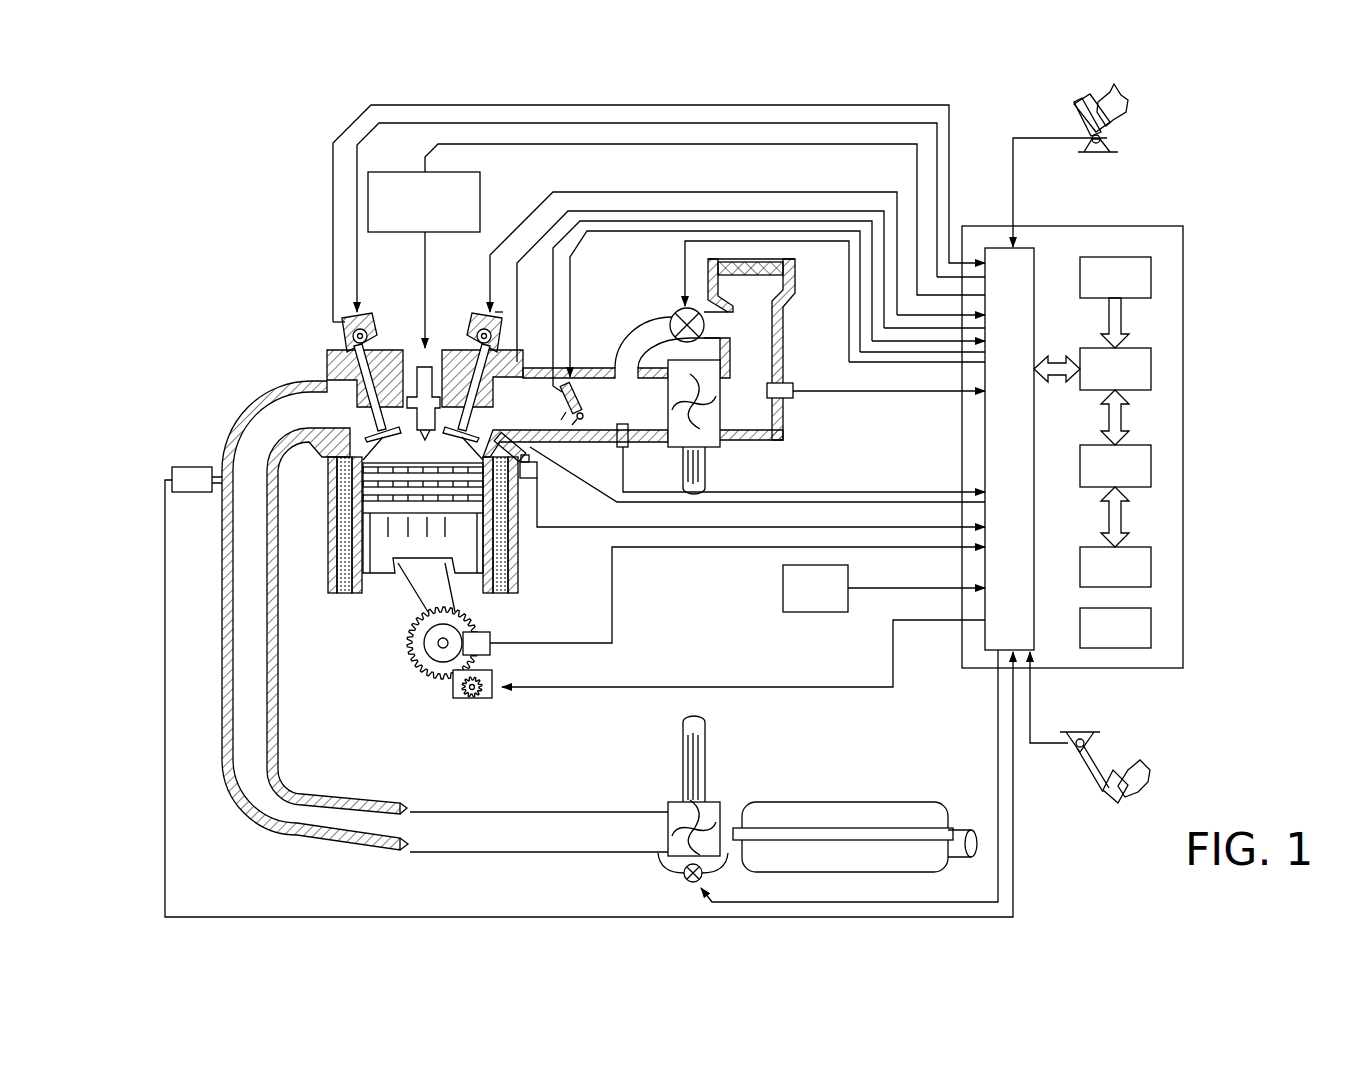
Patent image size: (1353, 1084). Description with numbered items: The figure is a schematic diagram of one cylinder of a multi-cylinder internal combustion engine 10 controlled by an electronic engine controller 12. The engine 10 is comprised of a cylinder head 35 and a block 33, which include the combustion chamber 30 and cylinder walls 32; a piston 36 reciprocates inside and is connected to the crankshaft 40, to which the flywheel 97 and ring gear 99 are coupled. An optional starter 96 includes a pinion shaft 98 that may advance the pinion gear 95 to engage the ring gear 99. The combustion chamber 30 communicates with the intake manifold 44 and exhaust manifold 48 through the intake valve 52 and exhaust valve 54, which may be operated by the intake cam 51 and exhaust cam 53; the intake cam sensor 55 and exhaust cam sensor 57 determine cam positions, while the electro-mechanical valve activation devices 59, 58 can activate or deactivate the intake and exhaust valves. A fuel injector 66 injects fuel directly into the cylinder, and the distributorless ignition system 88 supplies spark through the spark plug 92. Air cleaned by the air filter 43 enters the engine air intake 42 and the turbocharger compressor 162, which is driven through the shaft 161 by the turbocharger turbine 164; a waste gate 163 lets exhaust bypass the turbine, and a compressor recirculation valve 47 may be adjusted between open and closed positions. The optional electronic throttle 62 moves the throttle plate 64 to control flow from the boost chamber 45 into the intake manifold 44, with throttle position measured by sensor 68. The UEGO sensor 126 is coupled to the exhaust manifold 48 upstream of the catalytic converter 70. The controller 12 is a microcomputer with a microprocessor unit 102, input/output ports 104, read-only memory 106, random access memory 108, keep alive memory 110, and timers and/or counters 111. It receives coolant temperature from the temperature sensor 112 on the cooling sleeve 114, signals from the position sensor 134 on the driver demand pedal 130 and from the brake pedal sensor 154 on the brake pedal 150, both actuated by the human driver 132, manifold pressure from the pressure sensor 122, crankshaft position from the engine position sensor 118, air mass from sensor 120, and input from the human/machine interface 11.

The internal combustion engine 10 is at (258, 303).
The human/machine interface 11 is at (815, 588).
The electronic engine controller 12 is at (1183, 228).
The combustion chamber 30 is at (421, 443).
The cylinder walls 32 is at (370, 582).
The block 33 is at (323, 490).
The cylinder head 35 is at (323, 349).
The piston 36 is at (405, 548).
The crankshaft 40 is at (423, 680).
The engine air intake 42 is at (640, 282).
The air filter 43 is at (768, 276).
The intake manifold 44 is at (549, 418).
The boost chamber 45 is at (646, 418).
The compressor recirculation valve 47 is at (683, 312).
The exhaust manifold 48 is at (308, 427).
The intake cam 51 is at (477, 316).
The intake valve 52 is at (460, 413).
The exhaust cam 53 is at (368, 316).
The exhaust valve 54 is at (370, 400).
The intake cam sensor 55 is at (500, 341).
The exhaust cam sensor 57 is at (343, 336).
The valve activation device 58 is at (368, 337).
The valve activation device 59 is at (478, 341).
The electronic throttle 62 is at (580, 397).
The throttle plate 64 is at (584, 419).
The fuel injector 66 is at (530, 478).
The throttle position sensor 68 is at (535, 365).
The catalytic converter 70 is at (780, 802).
The distributorless ignition system 88 is at (384, 172).
The spark plug 92 is at (430, 362).
The pinion gear 95 is at (477, 702).
The starter 96 is at (483, 700).
The flywheel 97 is at (407, 657).
The pinion shaft 98 is at (470, 700).
The ring gear 99 is at (440, 683).
The microprocessor unit 102 is at (1151, 370).
The input/output ports 104 is at (1036, 262).
The read-only memory 106 is at (1151, 275).
The random access memory 108 is at (1151, 465).
The keep alive memory 110 is at (1151, 567).
The timers and/or counters 111 is at (1151, 630).
The temperature sensor 112 is at (532, 480).
The cooling sleeve 114 is at (513, 545).
The engine position sensor 118 is at (492, 640).
The air mass sensor 120 is at (790, 383).
The pressure sensor 122 is at (615, 442).
The Universal Exhaust Gas Oxygen (UEGO) sensor 126 is at (172, 470).
The driver demand pedal 130 is at (1078, 116).
The human driver 132 is at (1128, 103).
The position sensor 134 is at (1107, 138).
The brake pedal 150 is at (1104, 792).
The brake pedal sensor 154 is at (1072, 742).
The shaft 161 is at (683, 463).
The turbocharger compressor 162 is at (705, 430).
The waste gate 163 is at (685, 880).
The turbocharger turbine 164 is at (672, 800).